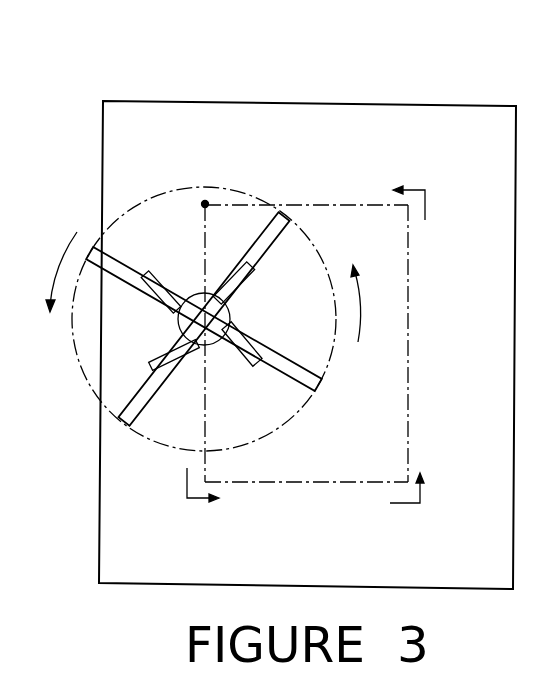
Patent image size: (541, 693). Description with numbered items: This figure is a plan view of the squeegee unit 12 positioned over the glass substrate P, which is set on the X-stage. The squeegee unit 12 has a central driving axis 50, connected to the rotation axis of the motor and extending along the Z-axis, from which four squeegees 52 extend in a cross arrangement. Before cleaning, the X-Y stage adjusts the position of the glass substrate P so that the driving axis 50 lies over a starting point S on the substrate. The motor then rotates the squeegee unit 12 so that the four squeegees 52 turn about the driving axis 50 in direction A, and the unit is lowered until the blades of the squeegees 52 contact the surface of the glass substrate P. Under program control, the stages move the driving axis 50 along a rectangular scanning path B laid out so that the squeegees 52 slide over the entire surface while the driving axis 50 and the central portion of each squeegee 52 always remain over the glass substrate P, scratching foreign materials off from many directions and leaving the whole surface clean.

The squeegee unit 12 is at (140, 331).
The driving axis 50 is at (220, 318).
The squeegees 52 is at (118, 257).
The glass substrate P is at (373, 118).
The starting point S is at (205, 201).
The scanning path B is at (300, 486).
The direction of rotation A is at (209, 287).